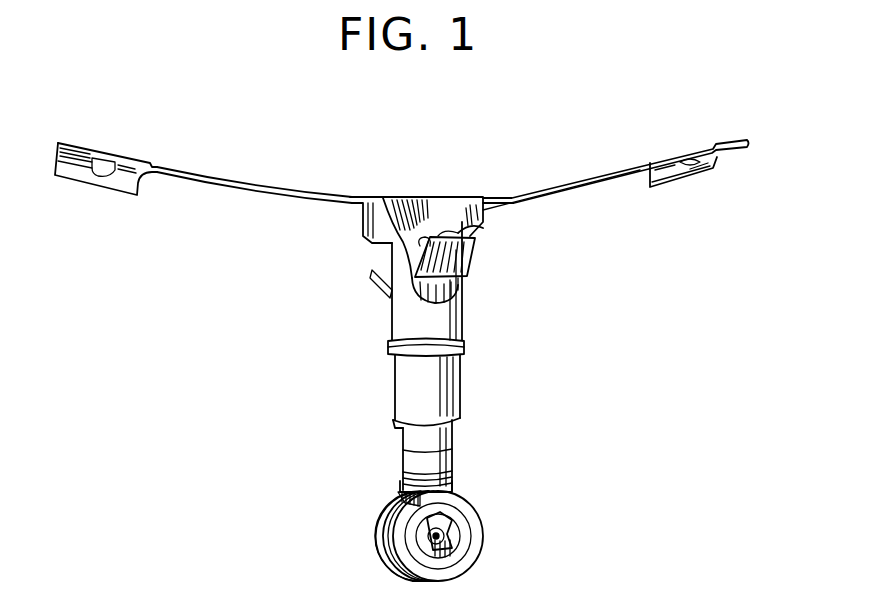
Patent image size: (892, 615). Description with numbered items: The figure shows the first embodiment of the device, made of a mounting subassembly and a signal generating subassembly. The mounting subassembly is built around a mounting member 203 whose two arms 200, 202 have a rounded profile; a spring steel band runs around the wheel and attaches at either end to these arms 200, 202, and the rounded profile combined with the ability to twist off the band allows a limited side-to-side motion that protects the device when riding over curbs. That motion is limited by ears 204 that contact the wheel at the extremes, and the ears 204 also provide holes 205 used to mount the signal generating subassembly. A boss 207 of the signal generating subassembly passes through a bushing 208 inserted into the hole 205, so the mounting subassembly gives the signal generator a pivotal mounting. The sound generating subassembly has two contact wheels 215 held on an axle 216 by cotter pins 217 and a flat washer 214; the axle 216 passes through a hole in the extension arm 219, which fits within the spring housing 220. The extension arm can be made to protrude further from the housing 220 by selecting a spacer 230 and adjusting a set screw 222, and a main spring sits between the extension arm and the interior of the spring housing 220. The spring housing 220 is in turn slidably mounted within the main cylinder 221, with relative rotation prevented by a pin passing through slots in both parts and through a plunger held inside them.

The arm 200 is at (672, 178).
The arm 202 is at (116, 184).
The mounting member 203 is at (238, 178).
The ears 204 is at (460, 255).
The holes 205 is at (483, 228).
The boss 207 is at (463, 295).
The bushing 208 is at (433, 237).
The extension arm 214 is at (395, 543).
The contact wheels 215 is at (370, 523).
The axle 216 is at (447, 537).
The cotter pins 217 is at (440, 510).
The extension arm 219 is at (405, 492).
The spring housing 220 is at (458, 393).
The main cylinder 221 is at (458, 327).
The set screw 222 is at (398, 427).
The spacer 230 is at (460, 477).